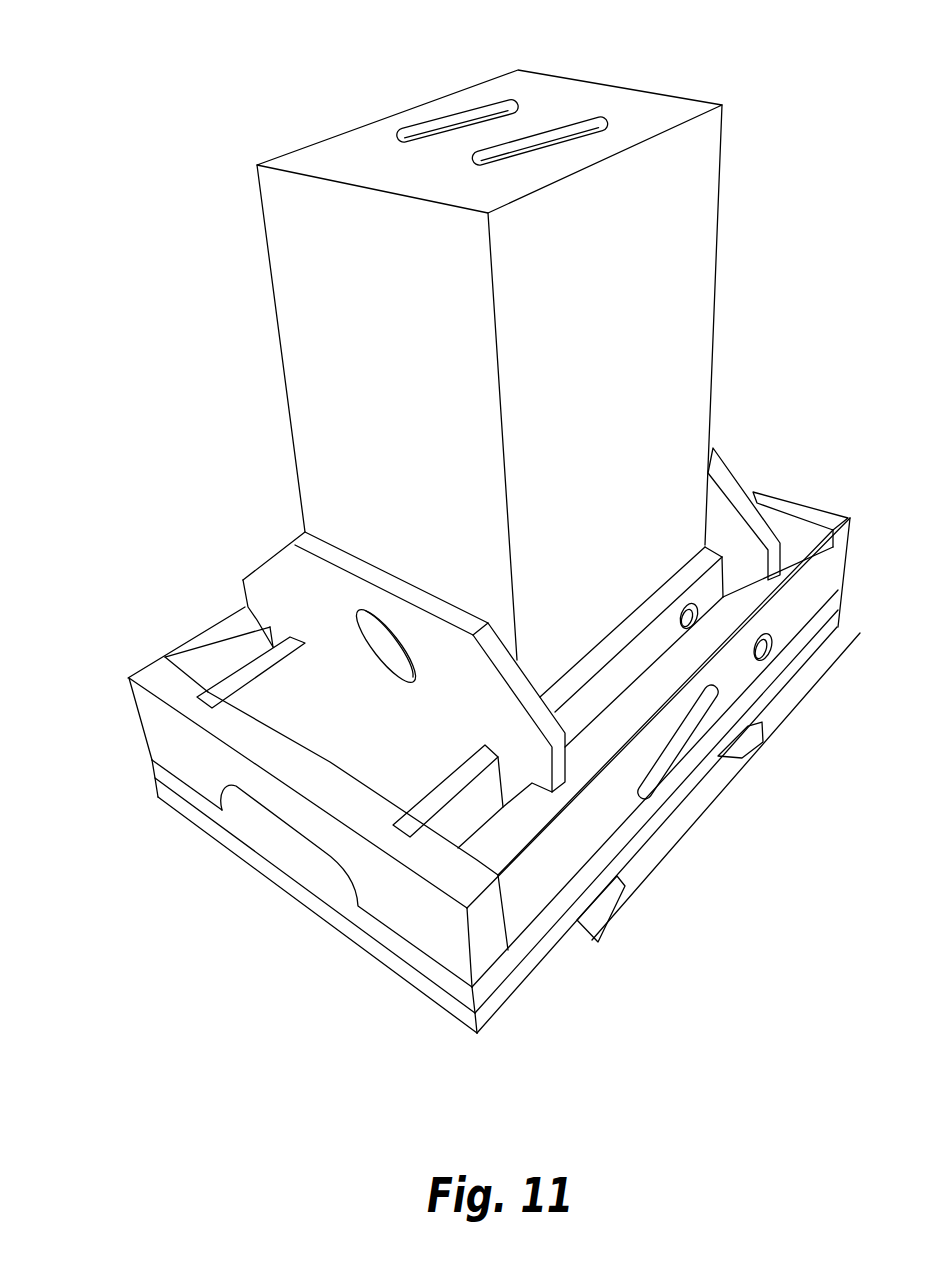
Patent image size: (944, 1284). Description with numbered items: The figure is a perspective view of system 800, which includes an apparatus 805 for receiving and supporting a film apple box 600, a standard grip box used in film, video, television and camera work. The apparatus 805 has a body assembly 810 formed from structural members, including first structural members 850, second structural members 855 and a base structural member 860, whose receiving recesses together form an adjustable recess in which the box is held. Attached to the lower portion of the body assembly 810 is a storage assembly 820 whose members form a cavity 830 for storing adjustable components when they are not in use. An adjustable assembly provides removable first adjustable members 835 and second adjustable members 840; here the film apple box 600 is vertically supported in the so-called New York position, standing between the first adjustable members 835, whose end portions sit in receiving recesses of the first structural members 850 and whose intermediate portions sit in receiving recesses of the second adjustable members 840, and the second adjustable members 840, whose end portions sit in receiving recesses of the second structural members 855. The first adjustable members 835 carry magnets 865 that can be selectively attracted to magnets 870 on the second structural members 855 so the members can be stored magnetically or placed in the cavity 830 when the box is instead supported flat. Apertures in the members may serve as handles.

The system 800 is at (722, 52).
The film apple box 600 is at (290, 288).
The apparatus 805 is at (126, 703).
The body assembly 810 is at (850, 516).
The storage assembly 820 is at (683, 837).
The cavity 830 is at (710, 788).
The first adjustable member 835 is at (627, 630).
The second adjustable member 840 is at (298, 573).
The first structural member 850 is at (800, 513).
The second structural member 855 is at (227, 633).
The base structural member 860 is at (447, 1003).
The magnet 865 is at (687, 607).
The magnet 870 is at (764, 648).